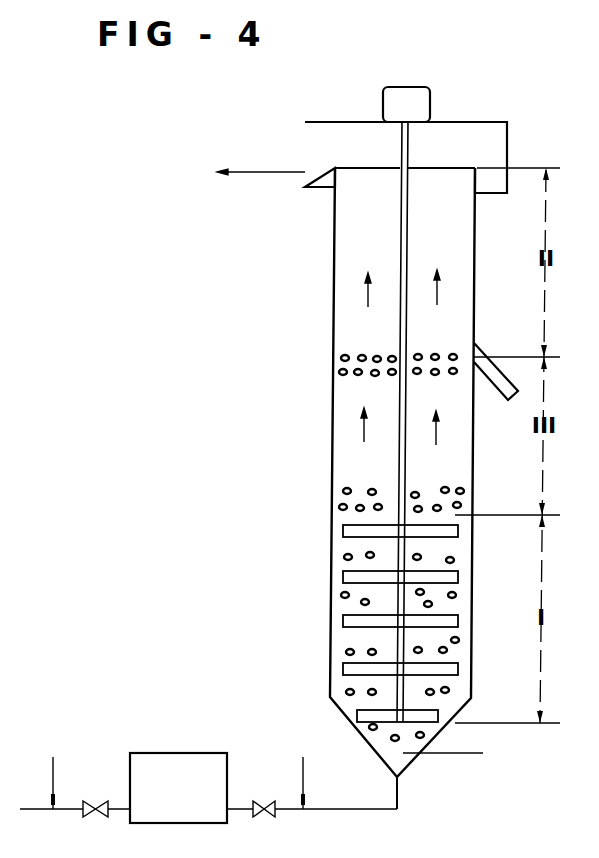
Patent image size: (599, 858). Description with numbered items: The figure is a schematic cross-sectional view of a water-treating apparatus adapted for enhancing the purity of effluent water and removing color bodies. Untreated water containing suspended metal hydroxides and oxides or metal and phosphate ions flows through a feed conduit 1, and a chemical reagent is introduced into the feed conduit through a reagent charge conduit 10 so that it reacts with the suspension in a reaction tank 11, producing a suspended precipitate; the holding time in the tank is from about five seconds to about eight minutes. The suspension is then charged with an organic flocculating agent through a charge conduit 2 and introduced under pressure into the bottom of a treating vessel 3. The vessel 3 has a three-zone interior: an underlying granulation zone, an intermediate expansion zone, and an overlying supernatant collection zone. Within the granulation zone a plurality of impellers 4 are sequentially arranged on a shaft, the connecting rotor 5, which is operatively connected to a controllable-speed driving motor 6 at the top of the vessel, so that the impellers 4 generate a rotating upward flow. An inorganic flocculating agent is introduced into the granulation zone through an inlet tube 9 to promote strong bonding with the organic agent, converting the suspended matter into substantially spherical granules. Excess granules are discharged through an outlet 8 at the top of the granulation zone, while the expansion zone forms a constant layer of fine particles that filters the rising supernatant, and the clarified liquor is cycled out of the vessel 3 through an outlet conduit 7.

The feed conduit 1 is at (32, 804).
The charge conduit 2 is at (306, 766).
The treating vessel 3 is at (333, 403).
The impellers 4 is at (458, 576).
The connecting rotor 5 is at (408, 256).
The driving motor 6 is at (432, 103).
The outlet conduit 7 is at (265, 172).
The outlet 8 is at (490, 388).
The inlet tube 9 is at (458, 754).
The reagent charge conduit 10 is at (55, 773).
The reaction tank 11 is at (182, 753).